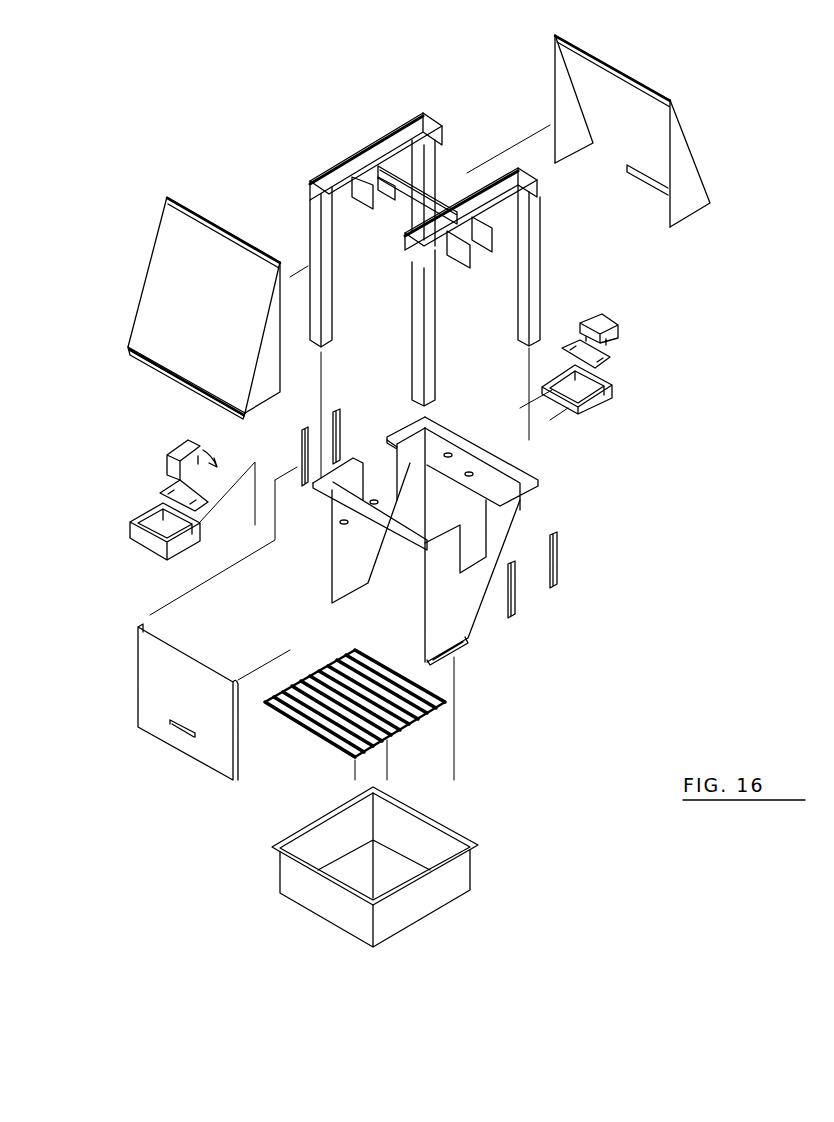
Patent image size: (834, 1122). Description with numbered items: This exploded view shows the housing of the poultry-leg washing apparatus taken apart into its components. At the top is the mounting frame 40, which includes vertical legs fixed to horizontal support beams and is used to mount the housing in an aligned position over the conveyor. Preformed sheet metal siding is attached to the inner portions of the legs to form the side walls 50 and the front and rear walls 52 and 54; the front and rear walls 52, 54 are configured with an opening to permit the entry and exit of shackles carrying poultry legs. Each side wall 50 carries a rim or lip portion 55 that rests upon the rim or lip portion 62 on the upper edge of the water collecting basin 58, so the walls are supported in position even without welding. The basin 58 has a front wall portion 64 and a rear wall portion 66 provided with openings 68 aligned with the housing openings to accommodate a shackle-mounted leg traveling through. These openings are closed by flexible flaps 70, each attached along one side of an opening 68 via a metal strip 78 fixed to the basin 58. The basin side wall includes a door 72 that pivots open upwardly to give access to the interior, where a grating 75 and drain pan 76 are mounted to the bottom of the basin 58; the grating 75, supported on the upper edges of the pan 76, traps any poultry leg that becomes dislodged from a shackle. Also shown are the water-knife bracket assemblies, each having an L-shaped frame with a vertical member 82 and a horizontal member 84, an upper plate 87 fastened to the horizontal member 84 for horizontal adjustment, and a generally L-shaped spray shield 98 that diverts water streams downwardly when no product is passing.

The mounting frame 40 is at (293, 178).
The side wall 50 is at (630, 145).
The front wall 52 is at (683, 180).
The rear wall 54 is at (553, 95).
The rim or lip portion 55 is at (165, 380).
The water collecting basin 58 is at (445, 546).
The rim or lip portion 62 is at (540, 480).
The front wall portion 64 is at (460, 613).
The rear wall portion 66 is at (330, 597).
The openings 68 is at (473, 532).
The flexible flaps 70 is at (368, 452).
The door 72 is at (152, 740).
The grating 75 is at (322, 733).
The drain pan 76 is at (453, 895).
The metal strip 78 is at (453, 455).
The vertical member 82 is at (143, 550).
The horizontal member 84 is at (180, 540).
The upper plate 87 is at (160, 492).
The spray shield 98 is at (185, 448).